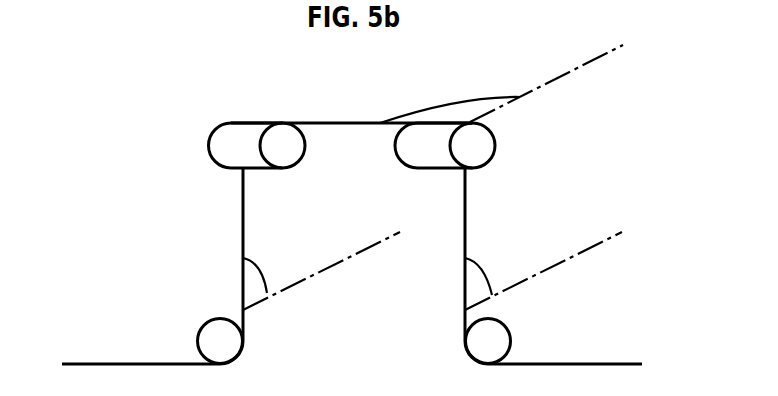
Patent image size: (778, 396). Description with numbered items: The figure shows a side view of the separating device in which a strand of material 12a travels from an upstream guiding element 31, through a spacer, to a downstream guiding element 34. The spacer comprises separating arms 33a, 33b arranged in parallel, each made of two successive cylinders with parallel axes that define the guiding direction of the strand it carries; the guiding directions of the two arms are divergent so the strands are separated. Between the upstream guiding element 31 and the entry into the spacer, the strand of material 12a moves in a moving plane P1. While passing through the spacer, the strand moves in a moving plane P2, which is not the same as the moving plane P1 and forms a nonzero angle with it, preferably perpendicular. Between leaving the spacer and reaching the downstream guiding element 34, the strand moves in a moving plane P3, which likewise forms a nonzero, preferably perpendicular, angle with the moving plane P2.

The separating arm 33a is at (226, 144).
The separating arm 33b is at (482, 147).
The upstream guiding element 31 is at (208, 341).
The downstream guiding element 34 is at (497, 343).
The strand of material 12a is at (570, 336).
The moving plane P1 is at (321, 271).
The moving plane P2 is at (501, 84).
The moving plane P3 is at (543, 271).